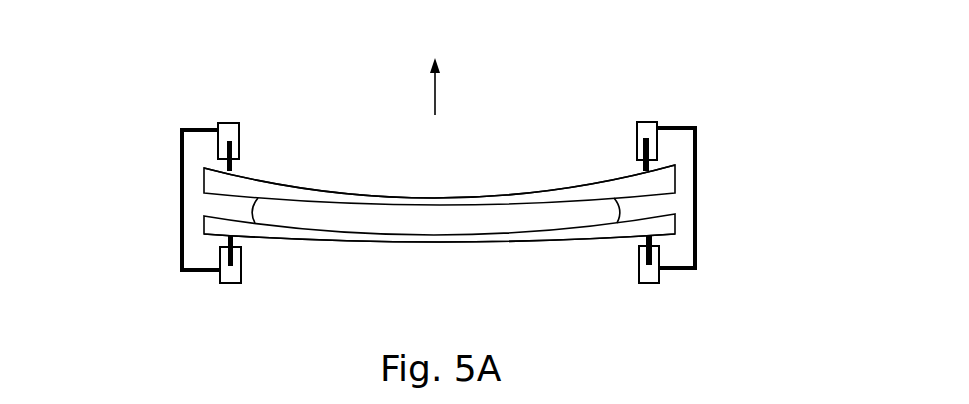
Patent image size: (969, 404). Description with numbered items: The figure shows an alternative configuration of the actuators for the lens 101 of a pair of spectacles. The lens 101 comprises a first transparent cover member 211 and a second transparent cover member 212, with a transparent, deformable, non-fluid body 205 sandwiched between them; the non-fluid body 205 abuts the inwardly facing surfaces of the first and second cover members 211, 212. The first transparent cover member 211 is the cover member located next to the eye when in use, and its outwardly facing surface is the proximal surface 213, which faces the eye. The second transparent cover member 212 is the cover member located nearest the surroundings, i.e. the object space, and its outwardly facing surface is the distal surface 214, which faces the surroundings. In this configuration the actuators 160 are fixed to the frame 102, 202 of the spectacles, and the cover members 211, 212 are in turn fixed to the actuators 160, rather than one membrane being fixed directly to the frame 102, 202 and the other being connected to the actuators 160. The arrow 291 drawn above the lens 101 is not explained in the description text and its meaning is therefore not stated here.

The lens 101 is at (191, 72).
The frame 102 is at (173, 150).
The frame 202 is at (705, 178).
The actuators 160 is at (241, 131).
The non-fluid body 205 is at (380, 220).
The first transparent cover member 211 is at (578, 192).
The proximal surface 213 is at (533, 172).
The second transparent cover member 212 is at (332, 235).
The distal surface 214 is at (545, 242).
The deflection direction 291 is at (409, 86).